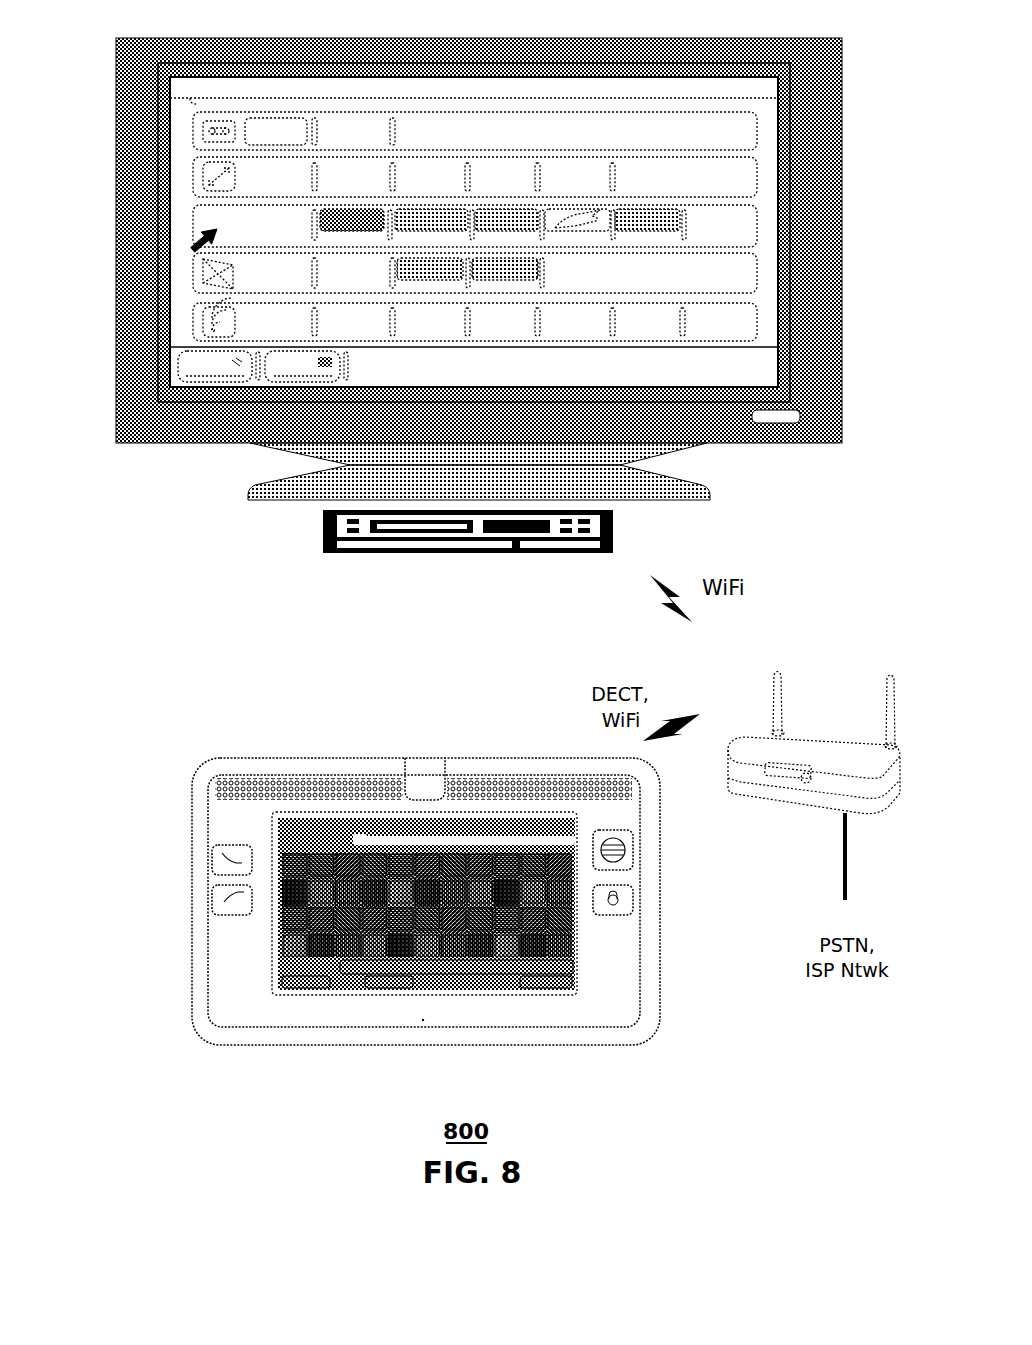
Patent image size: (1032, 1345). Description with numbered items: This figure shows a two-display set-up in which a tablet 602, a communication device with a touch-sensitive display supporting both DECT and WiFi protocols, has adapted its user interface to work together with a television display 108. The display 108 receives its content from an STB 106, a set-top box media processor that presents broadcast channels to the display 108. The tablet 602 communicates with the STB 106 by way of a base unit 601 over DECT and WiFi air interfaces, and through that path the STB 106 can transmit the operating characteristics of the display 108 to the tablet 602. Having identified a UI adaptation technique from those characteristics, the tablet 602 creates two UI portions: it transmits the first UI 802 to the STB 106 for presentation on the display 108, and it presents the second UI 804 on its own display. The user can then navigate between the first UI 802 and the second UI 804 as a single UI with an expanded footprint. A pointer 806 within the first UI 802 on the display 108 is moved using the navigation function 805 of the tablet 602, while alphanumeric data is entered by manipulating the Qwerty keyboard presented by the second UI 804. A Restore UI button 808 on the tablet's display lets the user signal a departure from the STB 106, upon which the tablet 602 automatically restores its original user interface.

The display 108 is at (808, 443).
The first UI 802 is at (212, 393).
The pointer 806 is at (197, 237).
The STB 106 is at (452, 553).
The base unit 601 is at (763, 782).
The tablet 602 is at (653, 938).
The second UI 804 is at (318, 995).
The Restore UI button 808 is at (403, 988).
The navigation function 805 is at (627, 853).